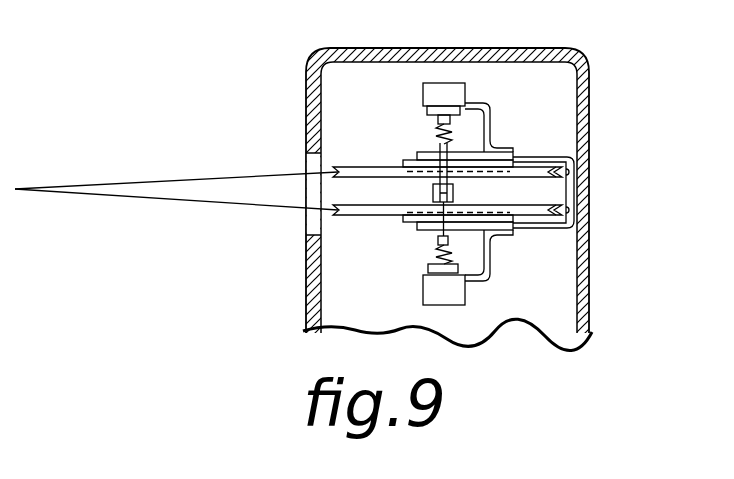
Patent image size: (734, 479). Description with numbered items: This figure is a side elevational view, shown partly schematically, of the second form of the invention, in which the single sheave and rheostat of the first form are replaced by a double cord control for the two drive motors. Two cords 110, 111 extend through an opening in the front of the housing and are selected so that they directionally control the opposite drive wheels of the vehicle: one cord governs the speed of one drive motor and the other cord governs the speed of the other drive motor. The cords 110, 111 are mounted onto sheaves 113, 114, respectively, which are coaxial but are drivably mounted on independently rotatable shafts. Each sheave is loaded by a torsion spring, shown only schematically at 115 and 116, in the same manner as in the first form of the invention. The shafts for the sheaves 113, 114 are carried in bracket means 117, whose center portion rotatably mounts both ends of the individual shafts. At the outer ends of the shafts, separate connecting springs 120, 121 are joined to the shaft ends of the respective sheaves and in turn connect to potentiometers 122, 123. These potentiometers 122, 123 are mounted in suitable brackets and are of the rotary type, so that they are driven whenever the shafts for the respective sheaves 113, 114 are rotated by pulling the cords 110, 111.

The cord 110 is at (199, 179).
The cord 111 is at (210, 200).
The sheave 113 is at (577, 159).
The sheave 114 is at (577, 230).
The torsion spring 115 is at (508, 167).
The torsion spring 116 is at (507, 219).
The bracket means 117 is at (453, 193).
The connecting spring 120 is at (443, 136).
The connecting spring 121 is at (437, 255).
The potentiometer 122 is at (440, 91).
The potentiometer 123 is at (452, 290).